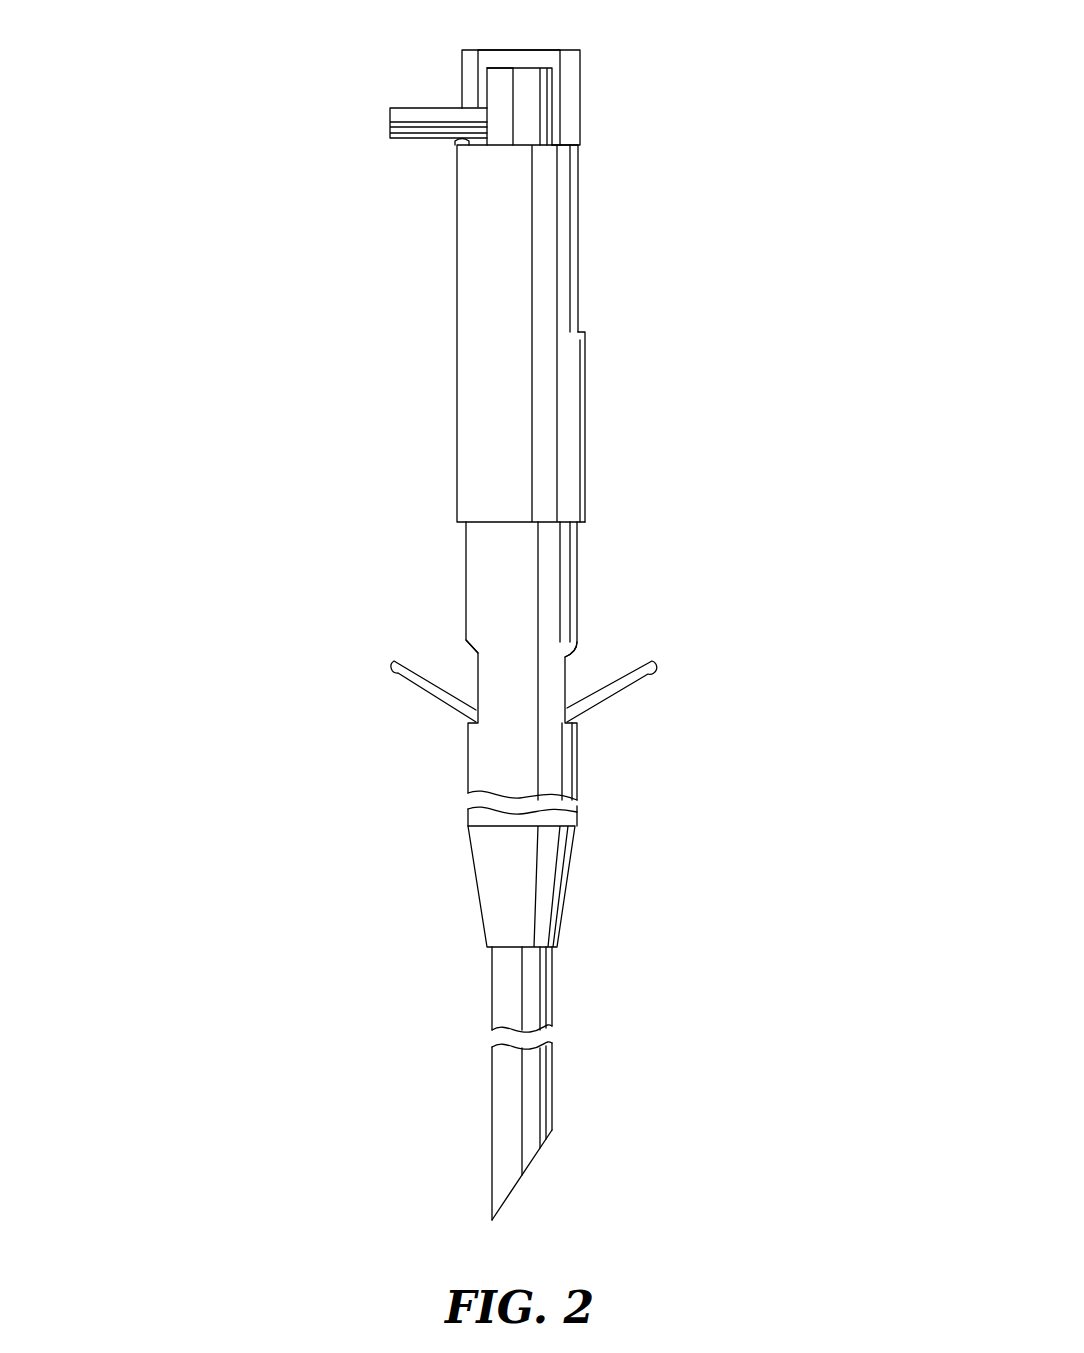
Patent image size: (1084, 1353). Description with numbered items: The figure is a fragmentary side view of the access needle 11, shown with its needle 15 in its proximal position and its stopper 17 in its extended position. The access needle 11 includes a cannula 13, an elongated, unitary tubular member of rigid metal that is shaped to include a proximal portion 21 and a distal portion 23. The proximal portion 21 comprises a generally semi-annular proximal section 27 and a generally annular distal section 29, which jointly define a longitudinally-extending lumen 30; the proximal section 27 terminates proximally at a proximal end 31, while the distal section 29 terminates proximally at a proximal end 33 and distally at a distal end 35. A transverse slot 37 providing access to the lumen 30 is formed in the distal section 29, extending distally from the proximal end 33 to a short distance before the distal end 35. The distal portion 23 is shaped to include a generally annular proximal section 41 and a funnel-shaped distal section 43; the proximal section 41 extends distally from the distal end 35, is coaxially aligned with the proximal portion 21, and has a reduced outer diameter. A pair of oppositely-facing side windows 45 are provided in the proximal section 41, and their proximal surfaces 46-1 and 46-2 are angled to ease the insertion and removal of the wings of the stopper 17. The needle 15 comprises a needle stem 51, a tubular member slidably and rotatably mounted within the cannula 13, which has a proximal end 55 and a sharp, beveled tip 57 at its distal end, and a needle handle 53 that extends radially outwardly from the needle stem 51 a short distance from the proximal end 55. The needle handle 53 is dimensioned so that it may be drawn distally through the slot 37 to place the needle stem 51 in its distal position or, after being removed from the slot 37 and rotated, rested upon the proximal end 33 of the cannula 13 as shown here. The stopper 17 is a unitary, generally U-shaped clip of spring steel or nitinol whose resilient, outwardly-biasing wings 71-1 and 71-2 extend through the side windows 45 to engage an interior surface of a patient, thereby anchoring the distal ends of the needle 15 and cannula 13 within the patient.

The access needle 11 is at (255, 198).
The cannula 13 is at (426, 514).
The needle 15 is at (470, 1108).
The stopper 17 is at (628, 743).
The proximal portion 21 is at (612, 294).
The distal portion 23 is at (428, 806).
The proximal section 27 is at (580, 98).
The distal section 29 is at (486, 425).
The lumen 30 is at (556, 141).
The proximal end 31 is at (507, 49).
The proximal end 33 is at (455, 142).
The distal end 35 is at (577, 526).
The transverse slot 37 is at (581, 207).
The proximal section 41 is at (552, 583).
The distal section 43 is at (557, 886).
The side windows 45 is at (478, 680).
The proximal surface 46-1 is at (477, 652).
The proximal surface 46-2 is at (566, 653).
The needle stem 51 is at (502, 92).
The needle handle 53 is at (408, 115).
The proximal end 55 is at (523, 69).
The beveled tip 57 is at (530, 1164).
The wing 71-1 is at (424, 688).
The wing 71-2 is at (627, 688).